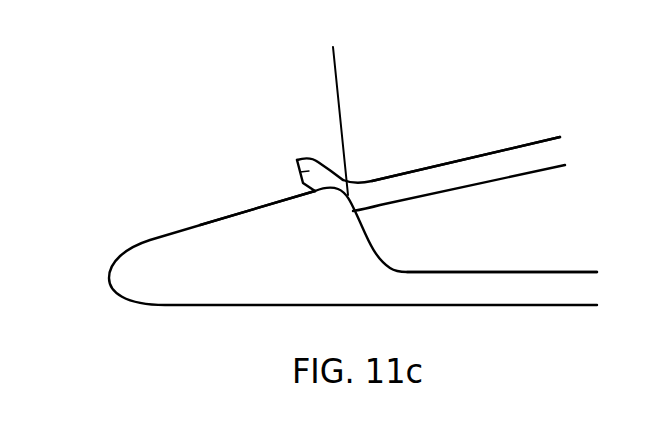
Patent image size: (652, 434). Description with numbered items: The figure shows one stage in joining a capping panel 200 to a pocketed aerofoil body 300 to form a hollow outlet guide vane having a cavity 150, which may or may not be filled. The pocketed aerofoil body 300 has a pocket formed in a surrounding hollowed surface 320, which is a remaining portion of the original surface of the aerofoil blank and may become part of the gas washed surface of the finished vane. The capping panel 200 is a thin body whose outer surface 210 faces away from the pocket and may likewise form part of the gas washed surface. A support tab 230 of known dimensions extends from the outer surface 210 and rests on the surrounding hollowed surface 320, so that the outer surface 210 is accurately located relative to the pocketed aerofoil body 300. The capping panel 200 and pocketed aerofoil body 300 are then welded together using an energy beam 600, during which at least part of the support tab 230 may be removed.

The cavity 150 is at (532, 239).
The capping panel 200 is at (532, 128).
The outer surface 210 is at (413, 171).
The support tab 230 is at (297, 163).
The pocketed aerofoil body 300 is at (152, 227).
The surrounding hollowed surface 320 is at (293, 202).
The energy beam 600 is at (340, 84).